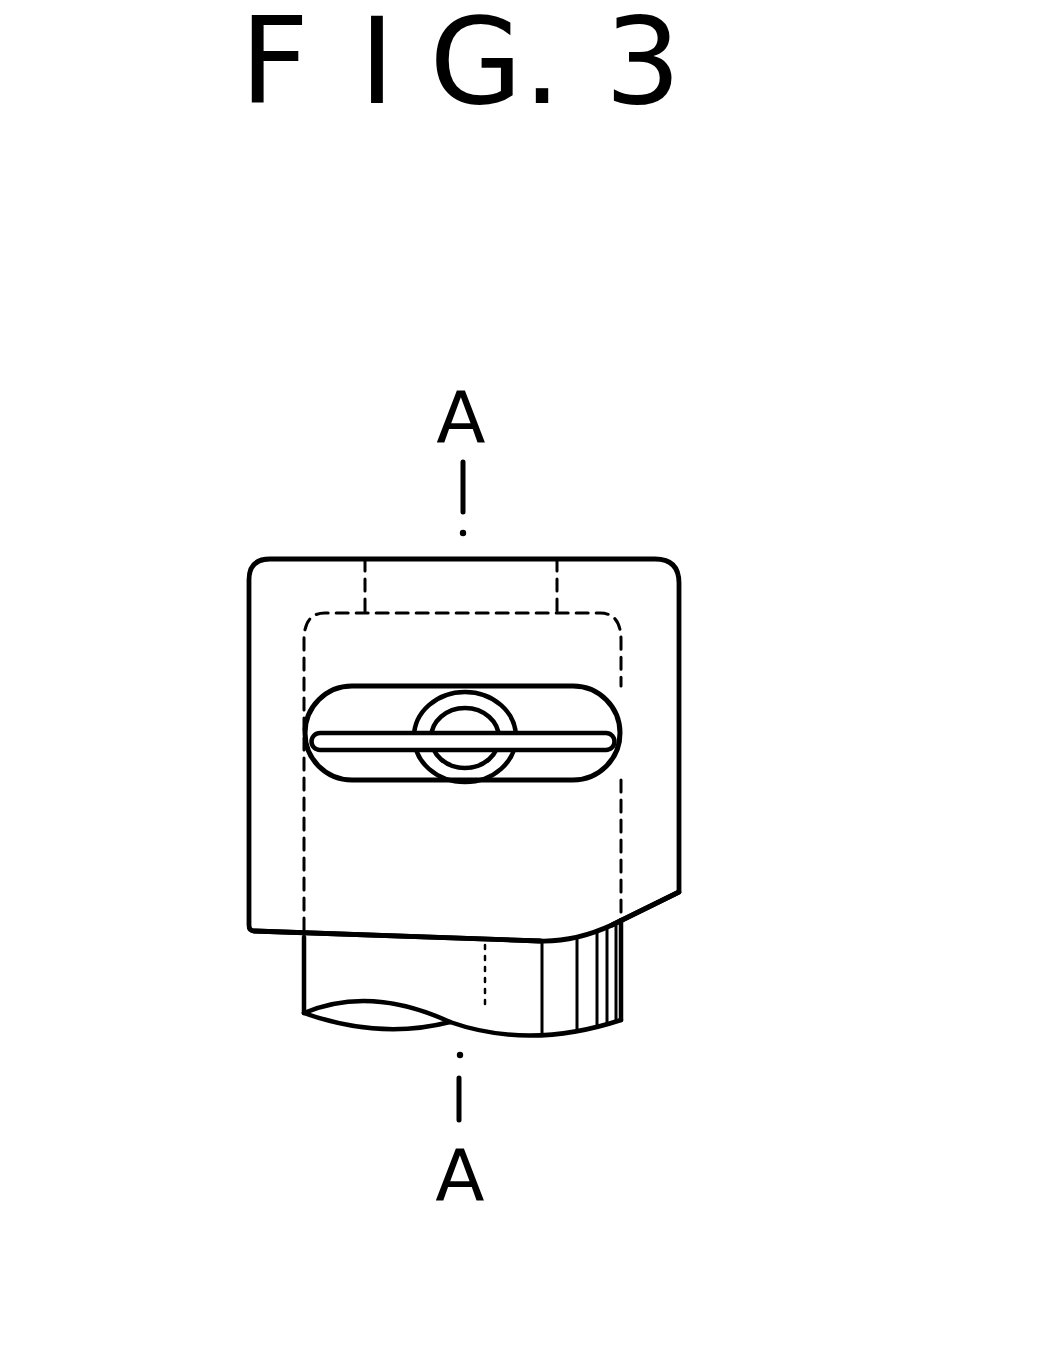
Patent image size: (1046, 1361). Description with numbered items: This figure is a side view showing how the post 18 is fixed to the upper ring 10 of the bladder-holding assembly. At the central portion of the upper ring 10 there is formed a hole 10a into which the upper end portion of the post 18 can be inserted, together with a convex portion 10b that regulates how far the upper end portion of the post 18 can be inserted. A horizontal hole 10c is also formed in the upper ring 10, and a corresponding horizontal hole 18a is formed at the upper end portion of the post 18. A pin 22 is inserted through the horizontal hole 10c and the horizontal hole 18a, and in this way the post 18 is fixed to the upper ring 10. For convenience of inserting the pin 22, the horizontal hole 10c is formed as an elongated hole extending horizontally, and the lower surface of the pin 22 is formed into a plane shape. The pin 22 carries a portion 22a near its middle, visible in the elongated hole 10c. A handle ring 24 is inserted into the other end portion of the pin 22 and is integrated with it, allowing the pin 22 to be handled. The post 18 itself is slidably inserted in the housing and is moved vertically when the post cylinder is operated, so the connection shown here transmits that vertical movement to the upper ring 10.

The upper ring 10 is at (667, 606).
The hole 10a is at (620, 867).
The convex portion 10b is at (583, 583).
The horizontal hole 10c is at (577, 780).
The post 18 is at (623, 982).
The horizontal hole 18a is at (490, 788).
The pin 22 is at (475, 723).
The opening of slot 22a is at (455, 780).
The handle ring 24 is at (618, 740).